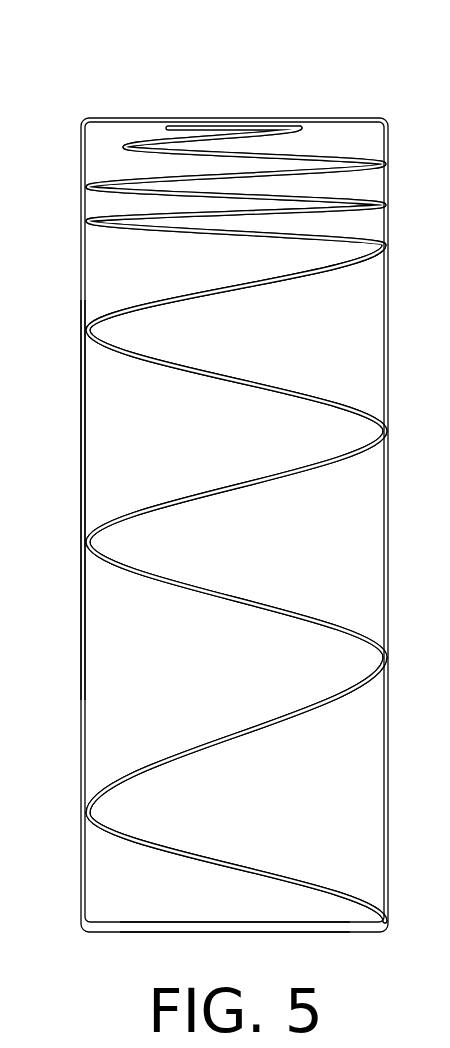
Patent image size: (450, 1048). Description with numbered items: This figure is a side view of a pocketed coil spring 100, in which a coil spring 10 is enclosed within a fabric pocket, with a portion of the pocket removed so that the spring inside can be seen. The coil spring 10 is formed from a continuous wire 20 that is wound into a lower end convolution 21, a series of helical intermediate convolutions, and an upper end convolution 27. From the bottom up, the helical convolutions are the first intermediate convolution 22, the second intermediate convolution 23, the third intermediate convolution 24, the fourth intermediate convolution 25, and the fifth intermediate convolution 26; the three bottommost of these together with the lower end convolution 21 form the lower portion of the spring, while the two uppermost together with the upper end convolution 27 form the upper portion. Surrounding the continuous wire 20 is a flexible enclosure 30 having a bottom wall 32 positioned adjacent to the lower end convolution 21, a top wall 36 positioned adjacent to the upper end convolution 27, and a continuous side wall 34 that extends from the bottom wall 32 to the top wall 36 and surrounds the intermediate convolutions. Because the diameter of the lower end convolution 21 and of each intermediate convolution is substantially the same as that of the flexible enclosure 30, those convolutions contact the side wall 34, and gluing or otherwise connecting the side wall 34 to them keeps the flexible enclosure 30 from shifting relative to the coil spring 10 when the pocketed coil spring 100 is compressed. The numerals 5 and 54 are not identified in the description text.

The pocketed coil spring 100 is at (78, 82).
The coil spring 10 is at (162, 181).
The continuous wire 20 is at (116, 778).
The lower end convolution 21 is at (390, 934).
The first intermediate convolution 22 is at (386, 655).
The second intermediate convolution 23 is at (386, 431).
The third intermediate convolution 24 is at (385, 245).
The fourth intermediate convolution 25 is at (385, 207).
The fifth intermediate convolution 26 is at (385, 164).
The upper end convolution 27 is at (303, 127).
The flexible enclosure 30 is at (82, 268).
The bottom wall 32 is at (100, 934).
The continuous side wall 34 is at (82, 445).
The top wall 36 is at (163, 118).
The fluid 5 is at (445, 385).
The fluid chamber 54 is at (440, 733).